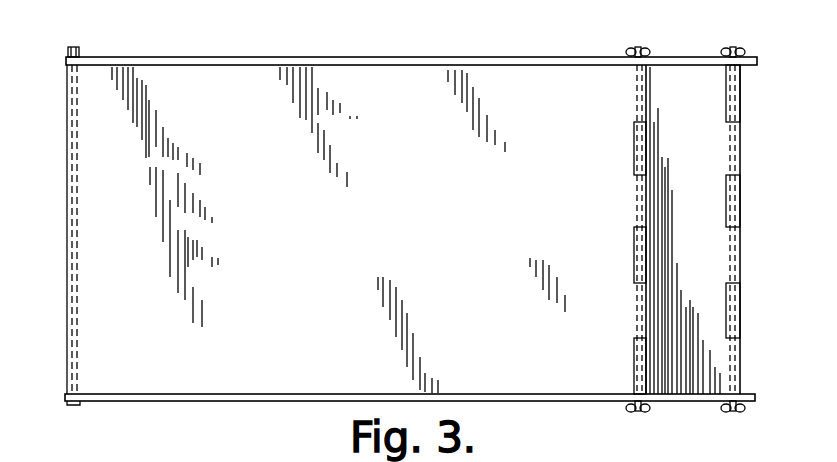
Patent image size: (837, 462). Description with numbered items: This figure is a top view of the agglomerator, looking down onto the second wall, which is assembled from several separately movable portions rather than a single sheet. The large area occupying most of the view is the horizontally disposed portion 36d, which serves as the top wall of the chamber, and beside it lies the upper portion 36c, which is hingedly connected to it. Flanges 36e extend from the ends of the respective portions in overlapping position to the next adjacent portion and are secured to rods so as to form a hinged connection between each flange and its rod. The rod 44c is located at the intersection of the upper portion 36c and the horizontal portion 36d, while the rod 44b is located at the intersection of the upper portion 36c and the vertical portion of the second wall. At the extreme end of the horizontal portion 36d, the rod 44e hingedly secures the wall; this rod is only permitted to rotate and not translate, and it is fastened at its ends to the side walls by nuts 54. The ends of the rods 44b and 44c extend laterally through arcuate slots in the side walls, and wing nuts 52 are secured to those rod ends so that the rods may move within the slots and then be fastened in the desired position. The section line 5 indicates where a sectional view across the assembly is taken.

The section line 5- 5 is at (43, 234).
The upper portion 36c is at (705, 240).
The horizontally disposed portion 36d is at (415, 233).
The flanges 36e is at (644, 110).
The rod 44b is at (742, 192).
The rod 44c is at (633, 204).
The rod 44e is at (78, 213).
The wing nuts 52 is at (724, 48).
The nuts 54 is at (80, 49).